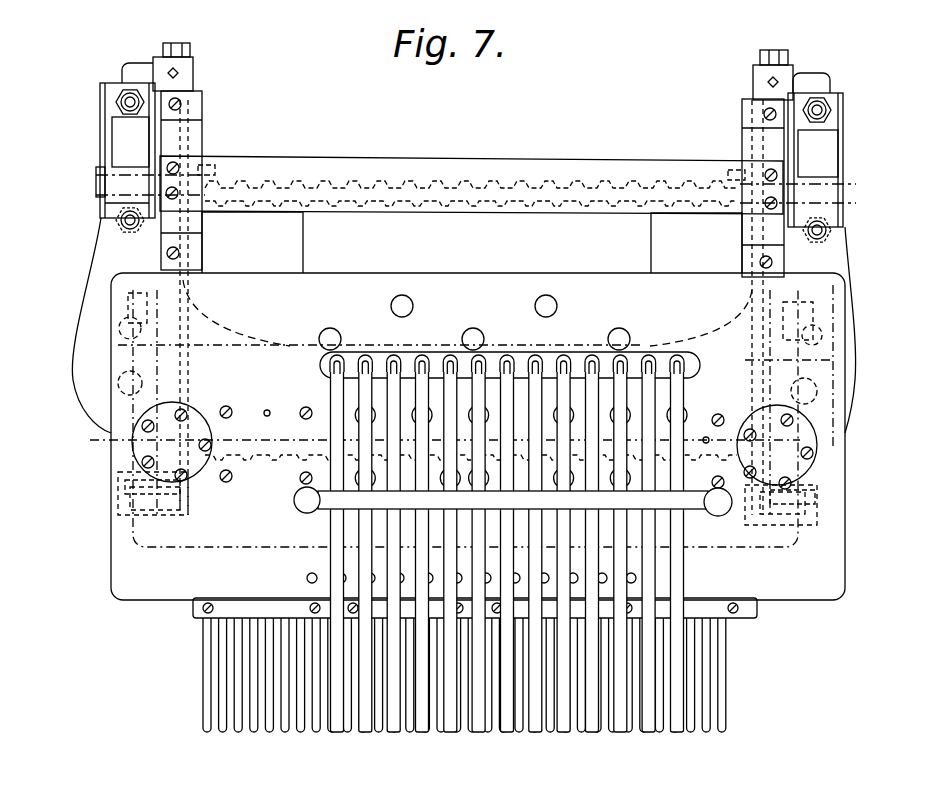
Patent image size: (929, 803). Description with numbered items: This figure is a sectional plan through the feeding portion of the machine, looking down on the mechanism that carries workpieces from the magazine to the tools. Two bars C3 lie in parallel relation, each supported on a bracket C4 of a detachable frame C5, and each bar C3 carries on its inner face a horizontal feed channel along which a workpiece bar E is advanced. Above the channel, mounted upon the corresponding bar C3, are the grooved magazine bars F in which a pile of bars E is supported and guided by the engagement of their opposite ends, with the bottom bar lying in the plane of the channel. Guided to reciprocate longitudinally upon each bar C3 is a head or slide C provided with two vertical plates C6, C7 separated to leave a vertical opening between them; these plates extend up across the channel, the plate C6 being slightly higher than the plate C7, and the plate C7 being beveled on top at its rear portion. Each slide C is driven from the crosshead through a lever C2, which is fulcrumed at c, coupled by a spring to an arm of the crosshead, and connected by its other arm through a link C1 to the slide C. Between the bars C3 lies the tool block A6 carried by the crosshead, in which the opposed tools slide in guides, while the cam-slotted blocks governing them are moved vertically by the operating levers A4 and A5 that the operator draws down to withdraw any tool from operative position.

The operating lever A4 is at (443, 707).
The operating lever A5 is at (295, 707).
The tool block A6 is at (160, 605).
The feeding slide C is at (130, 443).
The link C1 is at (115, 397).
The lever C2 is at (155, 261).
The bar C3 is at (188, 145).
The bracket C4 is at (187, 73).
The detachable frame C5 is at (92, 348).
The plate C6 is at (127, 465).
The plate C7 is at (196, 375).
The fulcrum c is at (178, 195).
The workpiece E is at (287, 427).
The magazine bar F is at (202, 168).